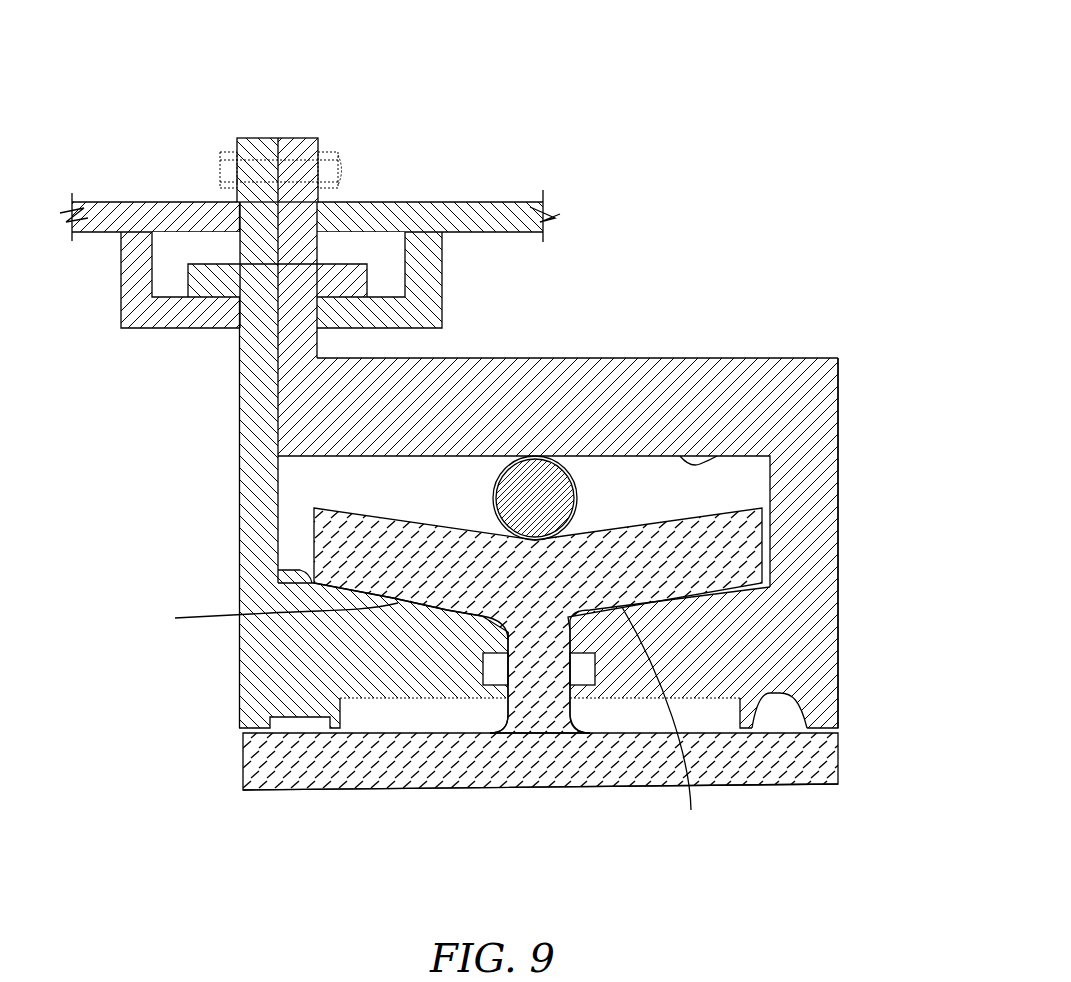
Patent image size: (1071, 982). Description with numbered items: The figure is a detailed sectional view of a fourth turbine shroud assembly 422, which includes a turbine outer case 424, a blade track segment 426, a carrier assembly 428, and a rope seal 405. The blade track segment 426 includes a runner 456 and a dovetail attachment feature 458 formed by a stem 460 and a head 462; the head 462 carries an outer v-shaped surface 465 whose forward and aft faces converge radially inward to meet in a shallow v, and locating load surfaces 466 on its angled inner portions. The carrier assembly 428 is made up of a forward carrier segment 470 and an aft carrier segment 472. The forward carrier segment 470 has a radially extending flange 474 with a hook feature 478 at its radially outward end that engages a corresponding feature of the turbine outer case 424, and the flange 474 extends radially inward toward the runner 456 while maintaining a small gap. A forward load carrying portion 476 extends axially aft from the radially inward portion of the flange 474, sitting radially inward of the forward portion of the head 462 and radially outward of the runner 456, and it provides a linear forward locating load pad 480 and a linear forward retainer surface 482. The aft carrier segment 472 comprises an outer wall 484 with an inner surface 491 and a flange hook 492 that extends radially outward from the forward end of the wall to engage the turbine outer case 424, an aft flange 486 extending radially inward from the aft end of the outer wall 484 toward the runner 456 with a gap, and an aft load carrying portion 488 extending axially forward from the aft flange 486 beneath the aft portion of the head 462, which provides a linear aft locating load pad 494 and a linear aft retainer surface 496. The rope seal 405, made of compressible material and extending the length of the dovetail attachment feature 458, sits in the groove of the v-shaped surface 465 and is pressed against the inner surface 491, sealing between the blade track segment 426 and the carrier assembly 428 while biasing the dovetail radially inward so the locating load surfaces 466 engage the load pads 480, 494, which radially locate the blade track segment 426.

The rope seal 405 is at (537, 480).
The turbine shroud assembly 422 is at (483, 135).
The turbine outer case 424 is at (126, 171).
The blade track segment 426 is at (752, 817).
The carrier assembly 428 is at (697, 268).
The runner 456 is at (290, 760).
The dovetail attachment feature 458 is at (550, 693).
The stem 460 is at (533, 690).
The head 462 is at (483, 573).
The outer v-shaped surface 465 is at (690, 510).
The locating load surfaces 466 is at (421, 721).
The forward carrier segment 470 is at (199, 527).
The aft carrier segment 472 is at (710, 350).
The radially extending flange 474 is at (249, 421).
The forward load carrying portion 476 is at (385, 645).
The hook feature 478 is at (205, 278).
The linear forward locating load pad 480 is at (398, 606).
The linear forward retainer surface 482 is at (283, 567).
The outer wall 484 is at (596, 382).
The aft flange 486 is at (807, 535).
The aft load carrying portion 488 is at (740, 660).
The inner surface 491 is at (717, 456).
The flange hook 492 is at (343, 283).
The linear aft locating load pad 494 is at (680, 603).
The linear aft retainer surface 496 is at (753, 592).